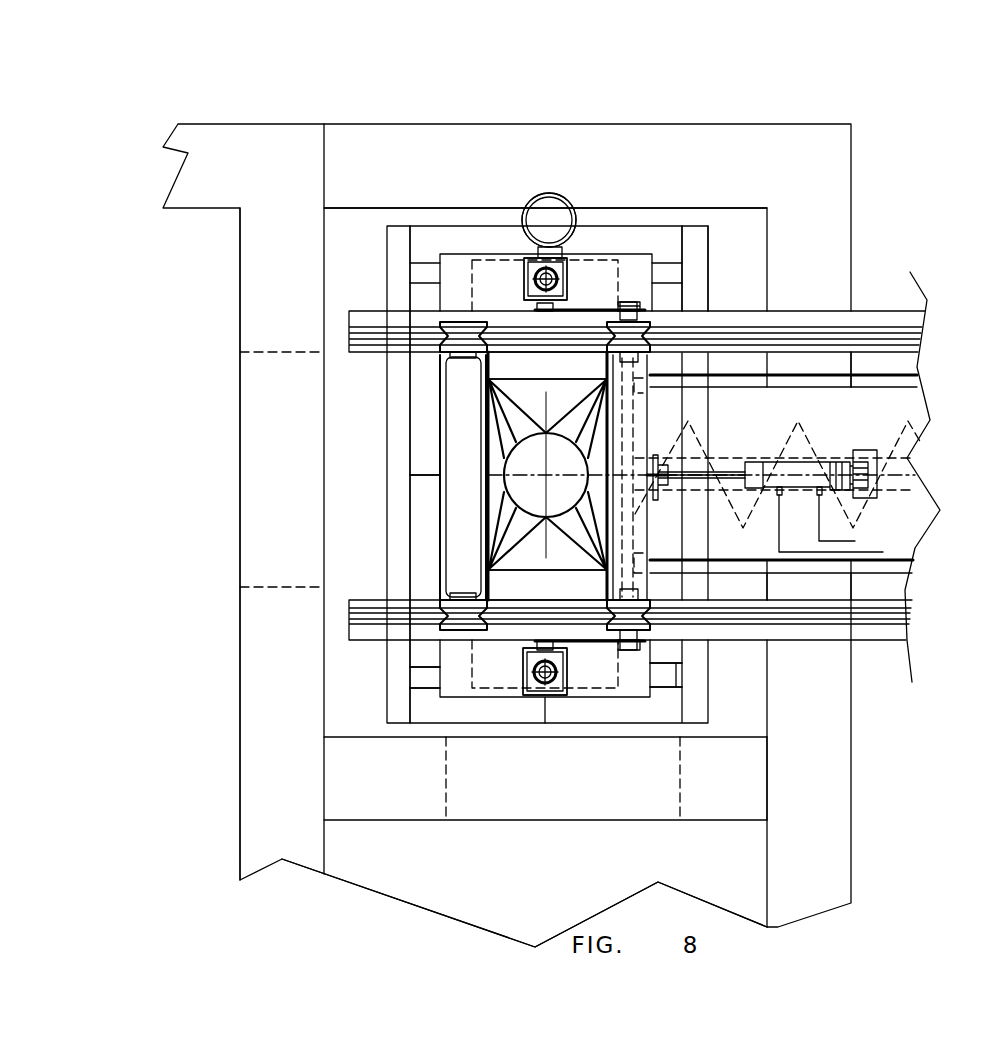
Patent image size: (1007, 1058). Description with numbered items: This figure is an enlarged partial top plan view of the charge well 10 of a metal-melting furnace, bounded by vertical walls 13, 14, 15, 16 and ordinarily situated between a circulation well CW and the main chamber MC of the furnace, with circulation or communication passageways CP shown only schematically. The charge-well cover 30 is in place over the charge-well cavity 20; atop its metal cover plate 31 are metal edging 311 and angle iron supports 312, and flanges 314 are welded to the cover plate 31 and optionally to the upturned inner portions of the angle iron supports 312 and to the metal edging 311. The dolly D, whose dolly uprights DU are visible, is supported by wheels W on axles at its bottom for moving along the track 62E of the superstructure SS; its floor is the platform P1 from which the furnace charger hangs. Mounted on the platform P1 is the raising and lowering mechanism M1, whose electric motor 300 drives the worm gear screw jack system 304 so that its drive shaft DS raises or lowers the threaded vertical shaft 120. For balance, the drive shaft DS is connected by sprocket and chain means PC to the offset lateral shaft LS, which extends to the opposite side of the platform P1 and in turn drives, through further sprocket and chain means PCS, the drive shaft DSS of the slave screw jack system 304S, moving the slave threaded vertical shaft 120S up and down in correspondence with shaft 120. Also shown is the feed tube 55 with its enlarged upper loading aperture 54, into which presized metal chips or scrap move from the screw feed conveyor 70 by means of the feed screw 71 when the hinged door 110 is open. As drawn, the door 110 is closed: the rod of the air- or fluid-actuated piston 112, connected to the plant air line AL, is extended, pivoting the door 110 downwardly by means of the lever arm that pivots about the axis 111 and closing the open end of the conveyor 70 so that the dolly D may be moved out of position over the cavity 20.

The charge well 10 is at (857, 123).
The vertical wall 14 is at (305, 303).
The vertical wall 16 is at (676, 168).
The vertical wall 15 is at (604, 812).
The vertical wall 13 is at (804, 779).
The charge-well cavity 20 is at (715, 225).
The charge-well cover 30 is at (710, 246).
The electric motor 300 is at (549, 237).
The worm gear screw jack system 304 is at (524, 263).
The threaded vertical shaft 120 is at (560, 280).
The threaded slave vertical shaft 120S is at (560, 674).
The slave worm gear screw jack system 304S is at (522, 677).
The metal cover plate 31 is at (558, 720).
The upper loading aperture 54 is at (543, 401).
The feed tube 55 is at (586, 452).
The hinged door 110 is at (633, 410).
The axis 111 is at (660, 472).
The piston 112 is at (758, 455).
The feed screw 71 is at (808, 432).
The screw feed conveyor 70 is at (912, 520).
The flanges 314 is at (428, 473).
The angle iron supports 312 is at (427, 678).
The metal edging 311 is at (705, 690).
The track 62E is at (870, 614).
The main chamber MC is at (172, 303).
The communication passageways CP is at (240, 497).
The circulation well CW is at (540, 905).
The superstructure SS is at (871, 304).
The wheels W is at (440, 327).
The platform P1 is at (546, 282).
The drive shaft DS is at (535, 311).
The slave drive shaft DSS is at (590, 657).
The raising and lowering mechanism M1 is at (536, 197).
The dolly uprights DU is at (448, 434).
The dolly D is at (431, 532).
The sprocket and chain means PC is at (590, 318).
The sprocket and chain means PCS is at (590, 620).
The lateral shaft LS is at (600, 556).
The air line AL is at (845, 530).